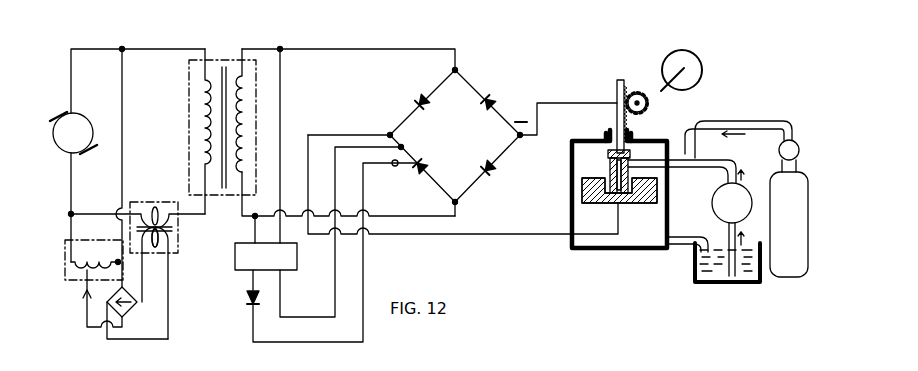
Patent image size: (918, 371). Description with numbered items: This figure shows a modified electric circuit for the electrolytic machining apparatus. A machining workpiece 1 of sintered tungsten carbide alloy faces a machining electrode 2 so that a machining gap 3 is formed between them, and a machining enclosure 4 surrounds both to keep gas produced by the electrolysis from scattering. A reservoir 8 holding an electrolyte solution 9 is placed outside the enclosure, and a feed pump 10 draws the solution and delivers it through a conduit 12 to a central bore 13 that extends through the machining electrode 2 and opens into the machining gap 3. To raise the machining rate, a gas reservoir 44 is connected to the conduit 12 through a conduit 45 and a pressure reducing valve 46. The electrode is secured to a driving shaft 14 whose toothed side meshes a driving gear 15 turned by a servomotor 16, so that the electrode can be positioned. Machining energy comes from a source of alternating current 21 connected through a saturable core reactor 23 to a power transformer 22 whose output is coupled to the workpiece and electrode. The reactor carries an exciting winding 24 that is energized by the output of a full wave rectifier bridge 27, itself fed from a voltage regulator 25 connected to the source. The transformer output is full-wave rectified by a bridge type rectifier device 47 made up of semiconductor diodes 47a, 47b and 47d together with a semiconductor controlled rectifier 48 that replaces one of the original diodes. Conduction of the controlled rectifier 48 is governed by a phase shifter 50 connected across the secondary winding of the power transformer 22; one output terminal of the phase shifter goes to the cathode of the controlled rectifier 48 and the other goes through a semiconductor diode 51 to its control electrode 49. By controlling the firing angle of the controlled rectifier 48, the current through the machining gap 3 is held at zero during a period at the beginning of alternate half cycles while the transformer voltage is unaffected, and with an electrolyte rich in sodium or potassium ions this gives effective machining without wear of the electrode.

The machining workpiece 1 is at (632, 205).
The machining electrode 2 is at (604, 139).
The machining gap 3 is at (604, 205).
The machining enclosure 4 is at (602, 250).
The reservoir 8 is at (707, 284).
The electrolyte solution 9 is at (731, 283).
The feed pump 10 is at (712, 202).
The conduit 12 is at (680, 160).
The central bore 13 is at (609, 167).
The driving shaft 14 is at (615, 95).
The driving gear 15 is at (646, 106).
The servomotor 16 is at (690, 52).
The source of alternating current 21 is at (53, 133).
The power transformer 22 is at (214, 47).
The saturable core reactor 23 is at (146, 201).
The exciting winding 24 is at (179, 243).
The voltage regulator 25 is at (39, 271).
The full wave rectifier bridge 27 is at (138, 326).
The gas reservoir 44 is at (789, 218).
The conduit 45 is at (757, 121).
The pressure reducing valve 46 is at (799, 150).
The rectifier device 47 is at (444, 139).
The semiconductor diode 47a is at (406, 95).
The semiconductor diode 47b is at (502, 95).
The semiconductor diode 47d is at (499, 178).
The semiconductor controlled rectifier 48 is at (394, 167).
The control electrode 49 is at (418, 172).
The phase shifter 50 is at (266, 256).
The semiconductor diode 51 is at (249, 297).